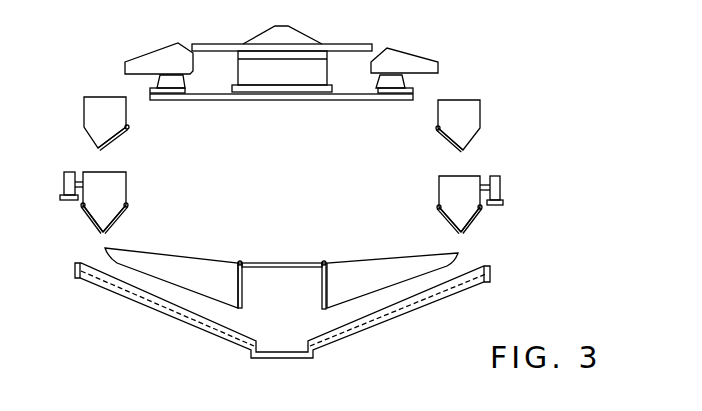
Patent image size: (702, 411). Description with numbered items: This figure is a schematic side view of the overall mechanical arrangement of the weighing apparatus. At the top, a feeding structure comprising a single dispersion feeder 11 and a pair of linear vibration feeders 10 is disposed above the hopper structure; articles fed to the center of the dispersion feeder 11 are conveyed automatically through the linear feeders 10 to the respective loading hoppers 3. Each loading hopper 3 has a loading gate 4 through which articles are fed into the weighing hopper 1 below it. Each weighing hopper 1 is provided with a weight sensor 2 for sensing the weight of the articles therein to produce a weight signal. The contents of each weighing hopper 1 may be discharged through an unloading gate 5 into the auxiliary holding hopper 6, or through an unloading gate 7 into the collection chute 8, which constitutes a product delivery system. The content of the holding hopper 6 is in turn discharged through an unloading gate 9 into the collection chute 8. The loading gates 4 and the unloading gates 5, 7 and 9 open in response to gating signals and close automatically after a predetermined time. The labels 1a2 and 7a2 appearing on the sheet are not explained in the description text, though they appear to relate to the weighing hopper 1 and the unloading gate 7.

The weighing hopper 1 is at (127, 188).
The weight sensor 2 is at (63, 186).
The loading hopper 3 is at (129, 118).
The loading gate 4 is at (120, 134).
The unloading gate 5 is at (120, 215).
The auxiliary holding hopper 6 is at (205, 259).
The unloading gate 7 is at (90, 217).
The collection chute 8 is at (180, 318).
The unloading gate 9 is at (243, 290).
The linear vibration feeder 10 is at (158, 52).
The dispersion feeder 11 is at (262, 37).
The label 1a2 is at (473, 16).
The label 7a2 is at (522, 16).